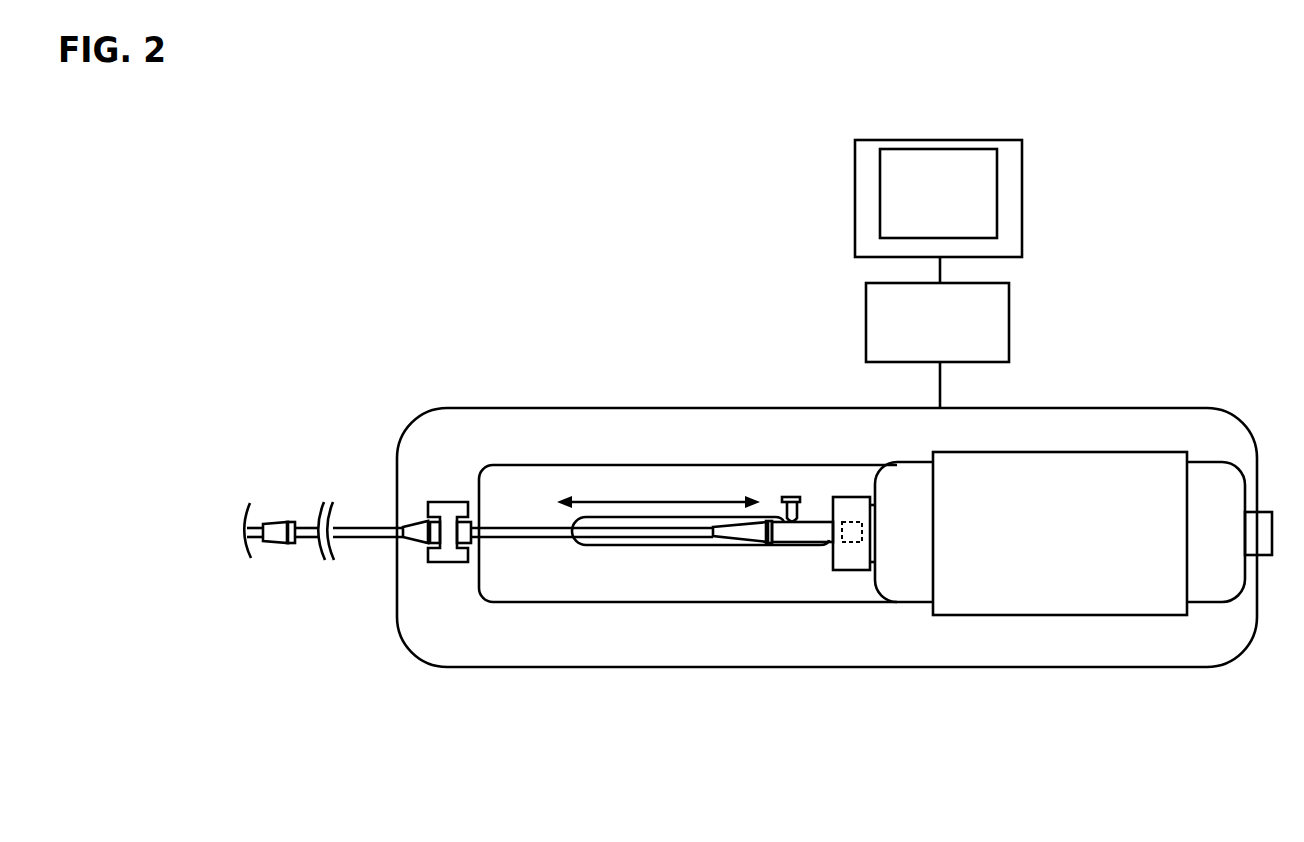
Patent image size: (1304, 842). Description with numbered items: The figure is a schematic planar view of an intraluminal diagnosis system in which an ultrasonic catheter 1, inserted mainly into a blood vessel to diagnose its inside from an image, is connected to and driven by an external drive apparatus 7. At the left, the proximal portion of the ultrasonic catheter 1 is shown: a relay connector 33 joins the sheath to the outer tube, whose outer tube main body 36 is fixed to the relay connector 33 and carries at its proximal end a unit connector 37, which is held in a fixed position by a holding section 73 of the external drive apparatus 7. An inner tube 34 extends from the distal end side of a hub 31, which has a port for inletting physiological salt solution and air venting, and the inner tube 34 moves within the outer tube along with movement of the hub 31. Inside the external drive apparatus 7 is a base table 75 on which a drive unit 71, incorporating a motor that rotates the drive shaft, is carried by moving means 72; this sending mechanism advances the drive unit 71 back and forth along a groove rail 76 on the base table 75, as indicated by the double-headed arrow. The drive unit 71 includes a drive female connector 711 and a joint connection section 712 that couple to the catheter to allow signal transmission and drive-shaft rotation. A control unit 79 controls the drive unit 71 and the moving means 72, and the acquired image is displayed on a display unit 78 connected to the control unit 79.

The ultrasonic catheter 1 is at (478, 478).
The external drive apparatus 7 is at (646, 400).
The hub 31 is at (812, 522).
The relay connector 33 is at (273, 509).
The inner tube 34 is at (518, 528).
The outer tube main body 36 is at (360, 538).
The unit connector 37 is at (452, 545).
The drive unit 71 is at (1210, 477).
The moving means 72 is at (1088, 592).
The holding section 73 is at (450, 505).
The base table 75 is at (1113, 432).
The groove rail 76 is at (623, 545).
The display unit 78 is at (862, 191).
The control unit 79 is at (868, 308).
The drive female connector 711 is at (851, 520).
The joint connection section 712 is at (852, 570).